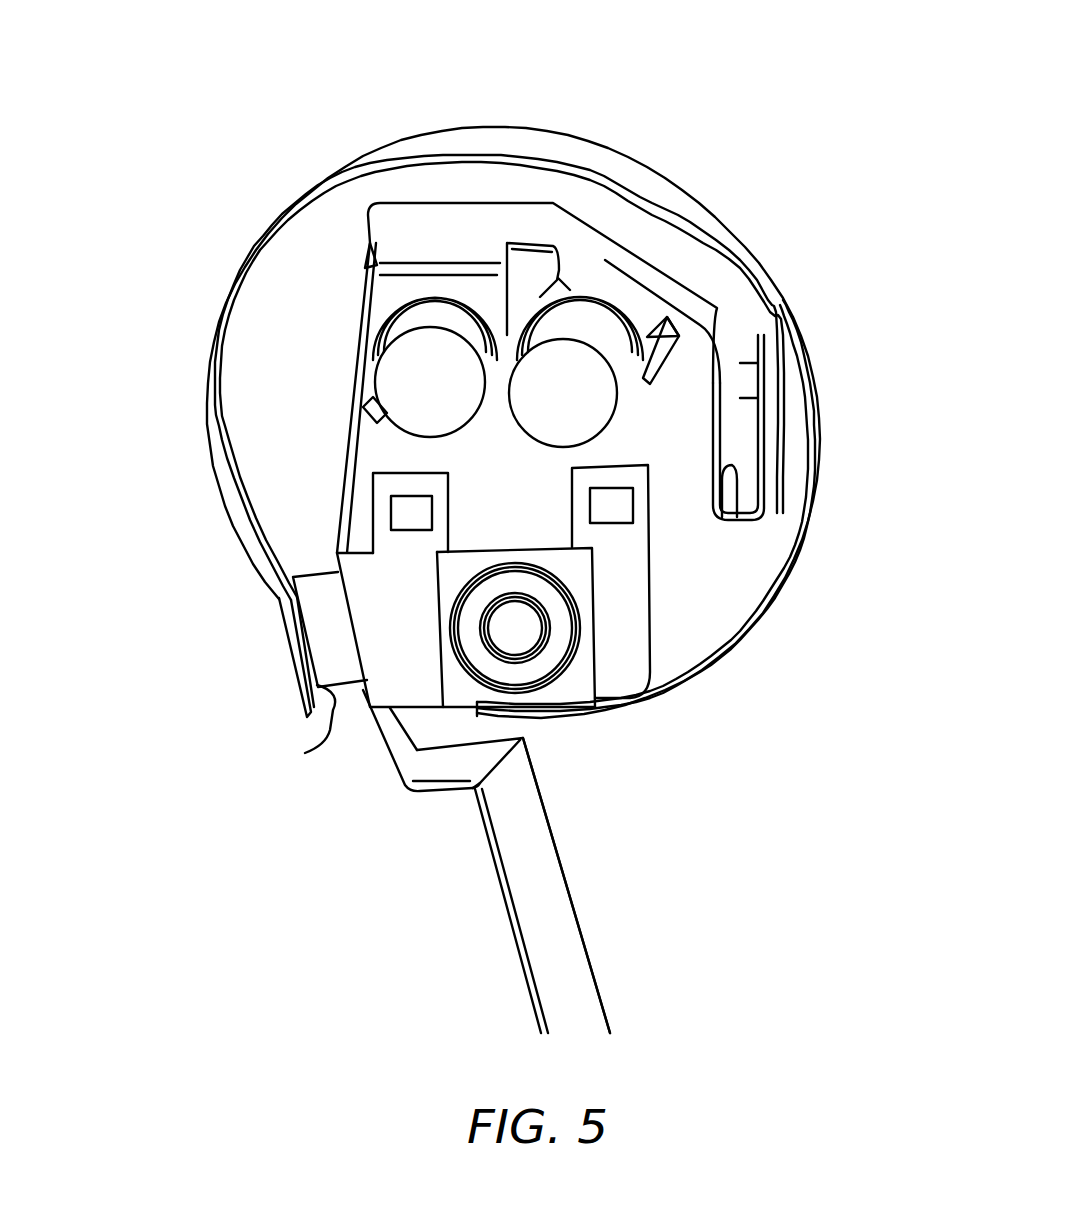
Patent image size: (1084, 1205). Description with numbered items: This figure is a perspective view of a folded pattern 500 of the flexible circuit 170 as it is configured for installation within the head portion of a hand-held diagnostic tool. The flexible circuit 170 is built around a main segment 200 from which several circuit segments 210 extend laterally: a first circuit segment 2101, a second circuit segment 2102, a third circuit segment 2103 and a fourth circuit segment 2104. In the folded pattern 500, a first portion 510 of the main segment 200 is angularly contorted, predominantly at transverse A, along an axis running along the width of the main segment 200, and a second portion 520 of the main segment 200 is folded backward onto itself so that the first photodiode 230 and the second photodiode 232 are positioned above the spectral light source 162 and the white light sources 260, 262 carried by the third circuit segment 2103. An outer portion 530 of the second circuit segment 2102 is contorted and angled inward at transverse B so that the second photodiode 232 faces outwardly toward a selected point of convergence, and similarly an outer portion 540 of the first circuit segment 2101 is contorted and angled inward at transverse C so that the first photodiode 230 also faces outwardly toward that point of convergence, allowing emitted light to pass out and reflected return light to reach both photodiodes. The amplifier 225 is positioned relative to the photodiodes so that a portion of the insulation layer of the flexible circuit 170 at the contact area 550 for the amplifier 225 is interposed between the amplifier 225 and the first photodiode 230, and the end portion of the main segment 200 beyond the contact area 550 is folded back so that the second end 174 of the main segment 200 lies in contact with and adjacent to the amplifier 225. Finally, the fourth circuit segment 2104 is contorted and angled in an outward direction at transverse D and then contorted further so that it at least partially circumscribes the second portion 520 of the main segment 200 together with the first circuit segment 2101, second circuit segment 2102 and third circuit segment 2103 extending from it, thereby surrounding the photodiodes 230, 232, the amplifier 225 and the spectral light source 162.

The spectral light source 162 is at (573, 693).
The flexible circuit 170 is at (590, 945).
The second end of the main segment 174 is at (780, 448).
The main segment 200 is at (520, 947).
The circuit segment 210 is at (513, 422).
The first circuit segment 2101 is at (562, 283).
The second circuit segment 2102 is at (440, 263).
The third circuit segment 2103 is at (630, 590).
The fourth circuit segment 2104 is at (262, 560).
The amplifier 225 is at (747, 500).
The first photodiode 230 is at (627, 307).
The second photodiode 232 is at (383, 367).
The white light source 260 is at (395, 512).
The white light source 262 is at (600, 500).
The folded pattern 500 is at (217, 706).
The first portion of the main segment 510 is at (447, 800).
The second portion of the main segment 520 is at (390, 755).
The outer portion of the second circuit segment 530 is at (383, 293).
The outer portion of the first circuit segment 540 is at (643, 380).
The contact area for the amplifier 550 is at (720, 467).
The transverse A is at (405, 795).
The transverse B is at (383, 267).
The transverse C is at (660, 335).
The transverse D is at (327, 727).